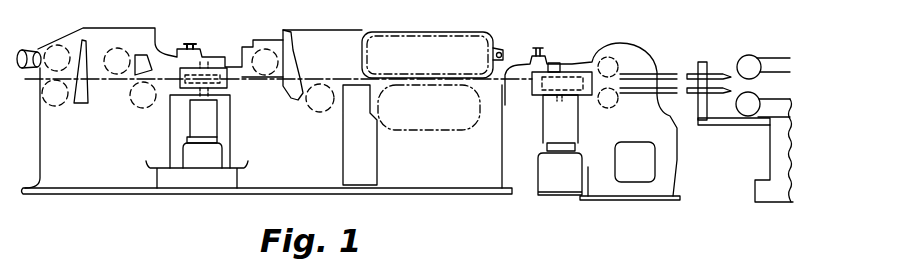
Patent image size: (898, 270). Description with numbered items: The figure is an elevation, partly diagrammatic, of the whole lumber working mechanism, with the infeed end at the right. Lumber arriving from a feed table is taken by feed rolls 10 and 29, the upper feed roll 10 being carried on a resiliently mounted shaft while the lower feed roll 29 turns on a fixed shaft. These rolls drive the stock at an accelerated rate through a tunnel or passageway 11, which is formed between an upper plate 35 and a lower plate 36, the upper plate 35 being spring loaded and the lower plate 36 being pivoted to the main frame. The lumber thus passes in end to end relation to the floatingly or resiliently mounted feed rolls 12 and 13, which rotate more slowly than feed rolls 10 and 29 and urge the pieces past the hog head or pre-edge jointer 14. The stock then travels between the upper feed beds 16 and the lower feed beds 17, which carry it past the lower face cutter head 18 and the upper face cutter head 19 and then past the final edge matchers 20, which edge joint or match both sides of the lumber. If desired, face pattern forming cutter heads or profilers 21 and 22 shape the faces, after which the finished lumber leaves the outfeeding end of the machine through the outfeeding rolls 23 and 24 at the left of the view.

The feed roll 10 is at (750, 42).
The tunnel or passageway 11 is at (667, 80).
The feed roll 12 is at (610, 61).
The feed roll 13 is at (610, 108).
The hog head or pre-edge jointer 14 is at (565, 99).
The upper feed bed 16 is at (457, 38).
The lower feed bed 17 is at (458, 130).
The lower face cutter head 18 is at (318, 113).
The upper face cutter head 19 is at (267, 78).
The final edge matcher 20 is at (215, 77).
The face pattern forming cutter head or profiler 21 is at (143, 108).
The face pattern forming cutter head or profiler 22 is at (123, 48).
The outfeeding roll 23 is at (50, 104).
The outfeeding roll 24 is at (52, 52).
The feed roll 29 is at (756, 99).
The upper plate 35 is at (717, 77).
The lower plate 36 is at (722, 92).